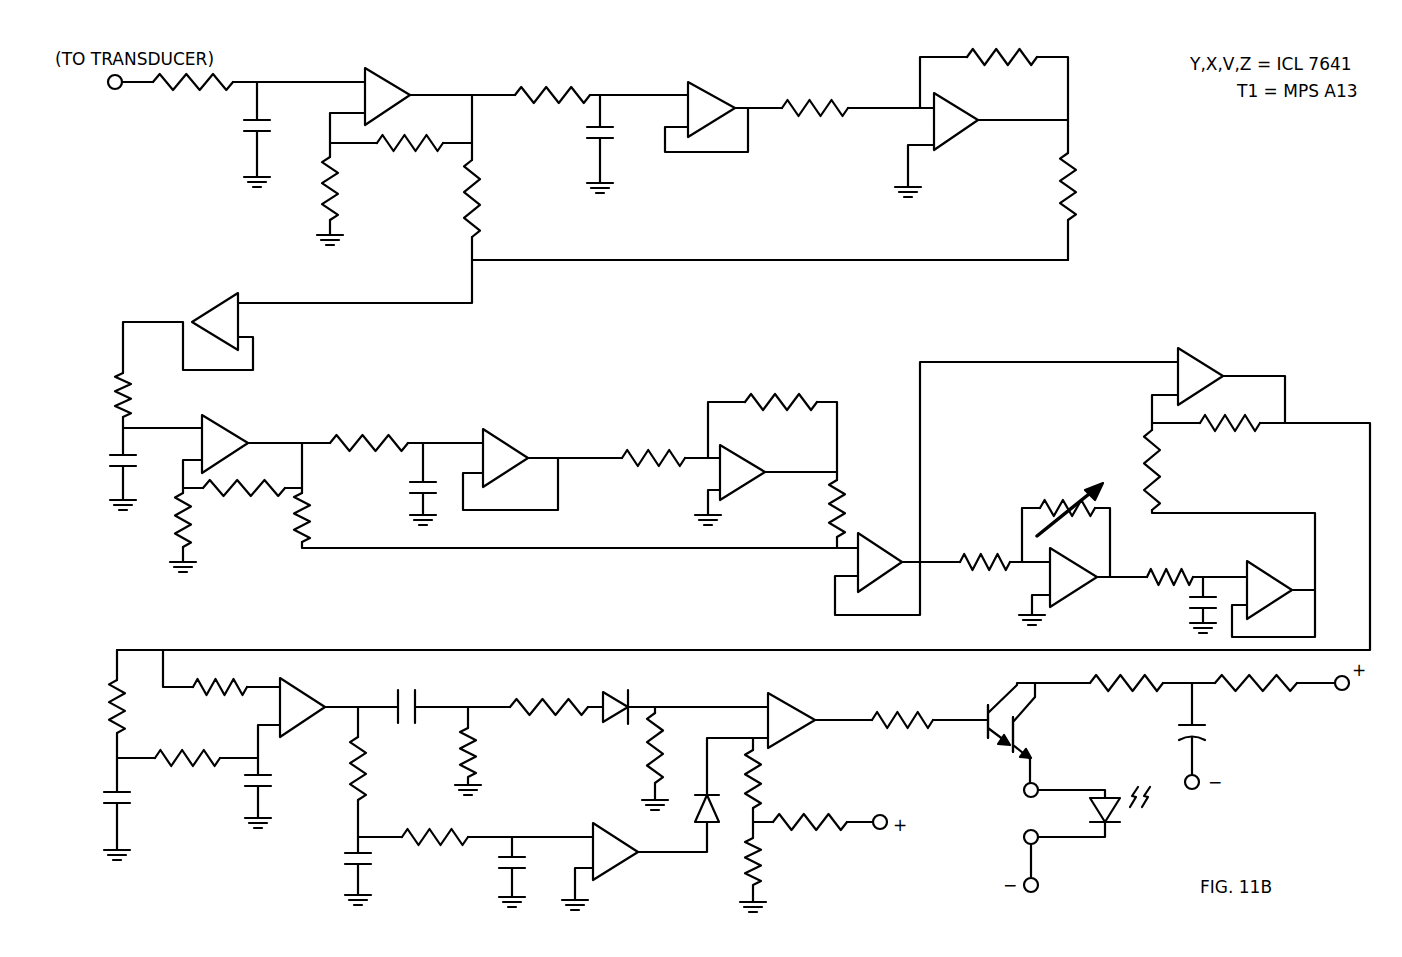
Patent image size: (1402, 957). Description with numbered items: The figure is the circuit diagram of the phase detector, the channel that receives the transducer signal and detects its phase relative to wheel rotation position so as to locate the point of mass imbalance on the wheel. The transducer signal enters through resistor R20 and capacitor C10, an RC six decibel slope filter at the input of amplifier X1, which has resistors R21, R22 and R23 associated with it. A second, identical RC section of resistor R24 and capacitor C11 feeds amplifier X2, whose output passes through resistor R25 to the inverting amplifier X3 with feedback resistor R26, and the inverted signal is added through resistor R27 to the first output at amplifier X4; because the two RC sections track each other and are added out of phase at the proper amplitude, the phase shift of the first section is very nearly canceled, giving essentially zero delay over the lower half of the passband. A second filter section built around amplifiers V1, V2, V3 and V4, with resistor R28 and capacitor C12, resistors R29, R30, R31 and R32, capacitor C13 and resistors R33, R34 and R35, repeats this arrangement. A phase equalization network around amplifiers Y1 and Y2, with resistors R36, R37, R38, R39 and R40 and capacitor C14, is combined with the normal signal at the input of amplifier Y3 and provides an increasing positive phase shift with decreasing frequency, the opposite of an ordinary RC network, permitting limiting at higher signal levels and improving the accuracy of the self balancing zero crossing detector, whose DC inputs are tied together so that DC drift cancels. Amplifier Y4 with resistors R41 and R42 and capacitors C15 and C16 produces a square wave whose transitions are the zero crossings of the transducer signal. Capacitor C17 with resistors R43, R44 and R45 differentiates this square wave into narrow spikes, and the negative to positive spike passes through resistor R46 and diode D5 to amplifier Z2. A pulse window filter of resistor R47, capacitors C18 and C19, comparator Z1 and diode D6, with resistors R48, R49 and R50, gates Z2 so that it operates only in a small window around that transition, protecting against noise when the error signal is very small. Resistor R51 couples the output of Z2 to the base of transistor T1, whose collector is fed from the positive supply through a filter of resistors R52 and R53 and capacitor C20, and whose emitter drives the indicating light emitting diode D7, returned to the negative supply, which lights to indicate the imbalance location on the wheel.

The resistor R20 270K R20 is at (191, 91).
The resistor R21 is at (328, 194).
The resistor R22 47K R22 is at (410, 144).
The resistor R23 is at (497, 198).
The resistor R24 is at (552, 94).
The resistor R25 15K R25 is at (815, 106).
The resistor R26 8.2K R26 is at (1002, 56).
The resistor R27 is at (1093, 186).
The resistor R28 270K R28 is at (92, 390).
The resistor R29 is at (180, 530).
The resistor R30 47K R30 is at (244, 486).
The resistor R31 100K R31 is at (324, 517).
The resistor R32 is at (369, 442).
The resistor R33 15K R33 is at (653, 460).
The resistor R34 8.2K R34 is at (781, 403).
The resistor R35 100K R35 is at (839, 508).
The resistor R36 47K R36 is at (984, 563).
The resistor R37 is at (1069, 510).
The resistor R38 is at (1148, 470).
The resistor R39 is at (1231, 424).
The resistor R40 is at (620, 638).
The resistor R41 is at (220, 688).
The resistor R42 is at (187, 759).
The resistor R43 is at (364, 768).
The resistor R44 470K R44 is at (435, 838).
The resistor R45 330K R45 is at (473, 761).
The resistor R46 470K R46 is at (549, 703).
The resistor R47 1M R47 is at (635, 761).
The resistor R48 is at (775, 779).
The resistor R49 is at (754, 875).
The resistor R50 220K R50 is at (810, 825).
The resistor R51 100K R51 is at (902, 720).
The resistor R52 100 R52 is at (1126, 686).
The resistor R53 100 R53 is at (1256, 686).
The capacitor C10 is at (263, 134).
The capacitor C11 .1 C11 is at (607, 144).
The capacitor C12 is at (103, 469).
The capacitor C13 is at (424, 484).
The capacitor C14 1.0 C14 is at (1198, 606).
The capacitor C15 1.5 C15 is at (101, 809).
The capacitor C16 1.5 C16 is at (255, 792).
The capacitor C17 .01 C17 is at (416, 694).
The capacitor C18 .5 C18 is at (340, 868).
The capacitor C19 .5 C19 is at (518, 871).
The capacitor C20 450 C20 is at (1201, 742).
The diode D5 is at (617, 694).
The diode D6 is at (696, 821).
The light emitting diode D7 60L D7 is at (1123, 825).
The operational amplifier X1 (ICL 7641) X1 is at (379, 94).
The operational amplifier X2 (ICL 7641) X2 is at (703, 107).
The operational amplifier X3 (ICL 7641) X3 is at (936, 143).
The operational amplifier X4 (ICL 7641) X4 is at (224, 318).
The operational amplifier V1 (ICL 7641) V1 is at (216, 444).
The operational amplifier V2 (ICL 7641) V2 is at (497, 458).
The operational amplifier V3 (ICL 7641) V3 is at (730, 485).
The operational amplifier V4 (ICL 7641) V4 is at (871, 562).
The operational amplifier Y1 (ICL 7641) Y1 is at (1058, 586).
The operational amplifier Y2 (ICL 7641) Y2 is at (1192, 376).
The operational amplifier Y3 (ICL 7641) Y3 is at (1261, 590).
The operational amplifier Y4 (ICL 7641) Y4 is at (294, 707).
The operational amplifier Z1 (ICL 7641) Z1 is at (600, 866).
The operational amplifier Z2 (ICL 7641) Z2 is at (783, 721).
The Darlington transistor T1 (MPS A13) T1 is at (997, 713).